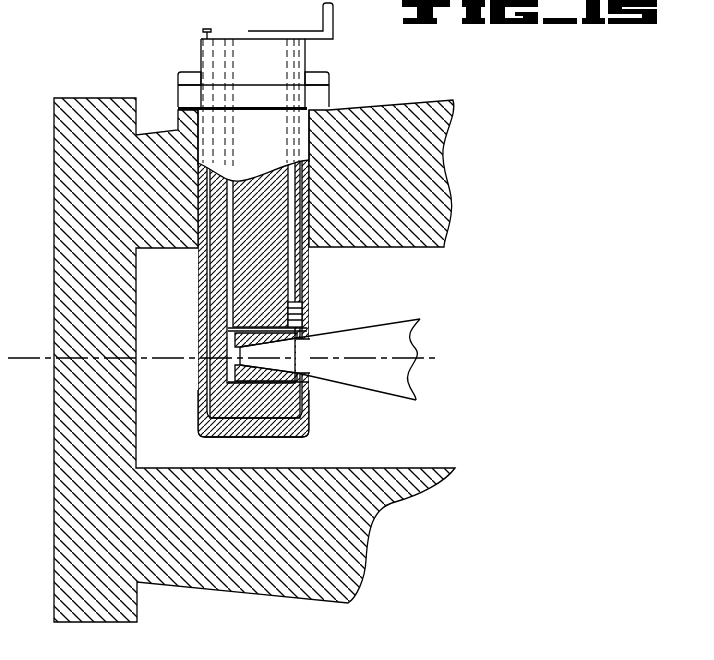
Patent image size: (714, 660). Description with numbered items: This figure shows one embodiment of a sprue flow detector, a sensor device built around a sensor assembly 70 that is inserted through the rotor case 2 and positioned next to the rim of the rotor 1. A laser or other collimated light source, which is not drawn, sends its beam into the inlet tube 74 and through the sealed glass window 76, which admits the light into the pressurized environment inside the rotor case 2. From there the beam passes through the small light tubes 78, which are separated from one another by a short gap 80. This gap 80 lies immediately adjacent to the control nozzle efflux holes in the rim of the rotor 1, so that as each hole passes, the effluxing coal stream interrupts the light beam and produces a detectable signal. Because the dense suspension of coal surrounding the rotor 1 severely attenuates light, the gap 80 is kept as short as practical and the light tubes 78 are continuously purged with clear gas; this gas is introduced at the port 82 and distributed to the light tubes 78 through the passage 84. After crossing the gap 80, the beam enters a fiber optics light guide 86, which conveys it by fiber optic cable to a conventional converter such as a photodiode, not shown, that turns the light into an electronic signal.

The rotor 1 is at (382, 378).
The rotor case 2 is at (246, 595).
The sensor assembly 70 is at (310, 278).
The inlet tube 74 is at (294, 43).
The sealed glass window 76 is at (308, 296).
The light tubes 78 is at (308, 340).
The gap 80 is at (304, 352).
The port 82 is at (229, 43).
The passage 84 is at (230, 309).
The fiber optics light guide 86 is at (203, 385).